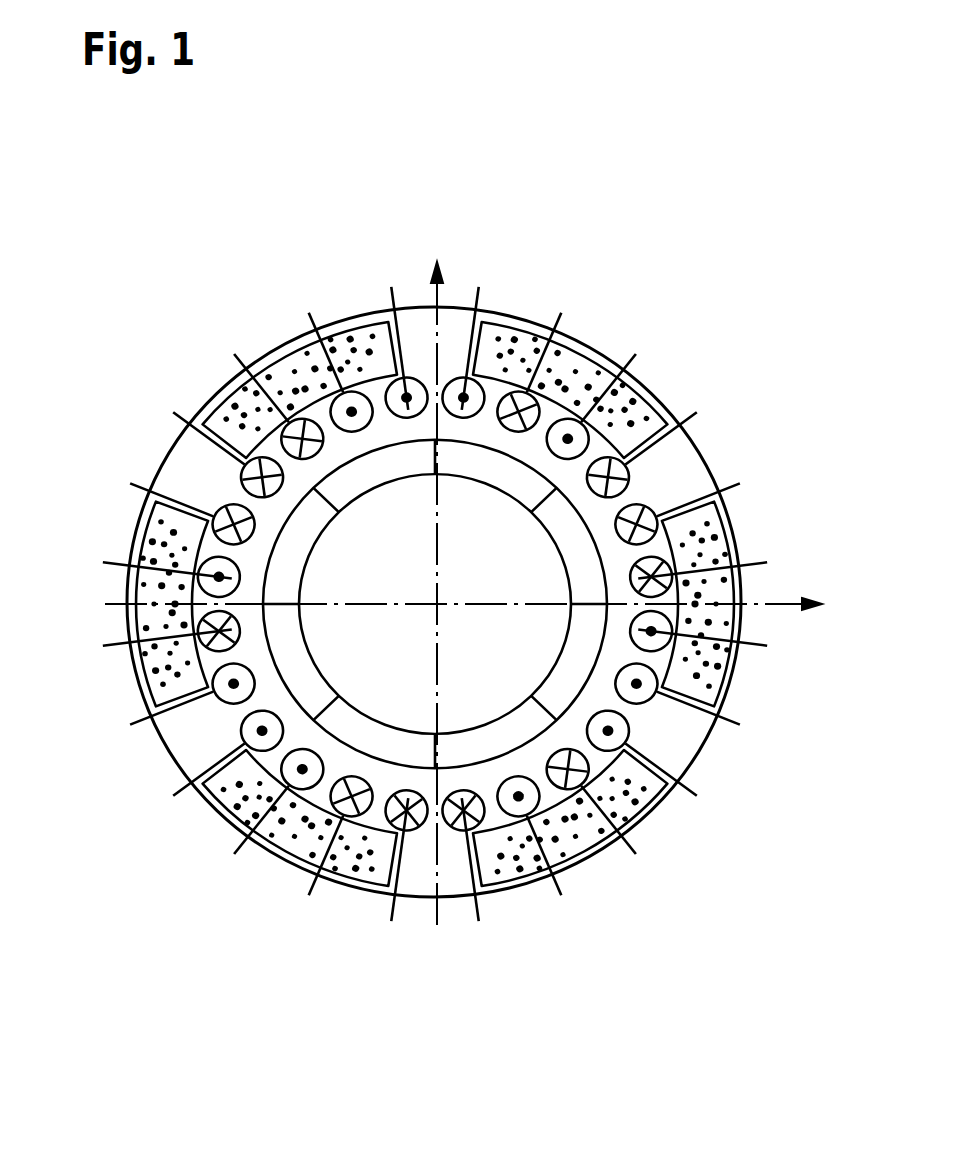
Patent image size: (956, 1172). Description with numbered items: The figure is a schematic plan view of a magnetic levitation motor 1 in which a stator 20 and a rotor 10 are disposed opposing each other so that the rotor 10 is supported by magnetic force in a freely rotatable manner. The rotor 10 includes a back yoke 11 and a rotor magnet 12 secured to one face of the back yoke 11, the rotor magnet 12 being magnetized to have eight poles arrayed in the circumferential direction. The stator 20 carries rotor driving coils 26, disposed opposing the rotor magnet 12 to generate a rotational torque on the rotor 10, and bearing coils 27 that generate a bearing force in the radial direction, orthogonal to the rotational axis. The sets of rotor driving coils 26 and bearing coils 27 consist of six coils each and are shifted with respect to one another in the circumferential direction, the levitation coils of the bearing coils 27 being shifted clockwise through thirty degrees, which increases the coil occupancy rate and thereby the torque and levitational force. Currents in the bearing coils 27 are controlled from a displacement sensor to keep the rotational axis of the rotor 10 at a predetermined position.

The magnetic levitation motor 1 is at (139, 285).
The rotor 10 is at (515, 567).
The back yoke 11 is at (706, 746).
The rotor magnet 12 is at (345, 715).
The stator 20 is at (155, 752).
The rotor driving coils 26 is at (556, 414).
The bearing coils 27 is at (300, 340).